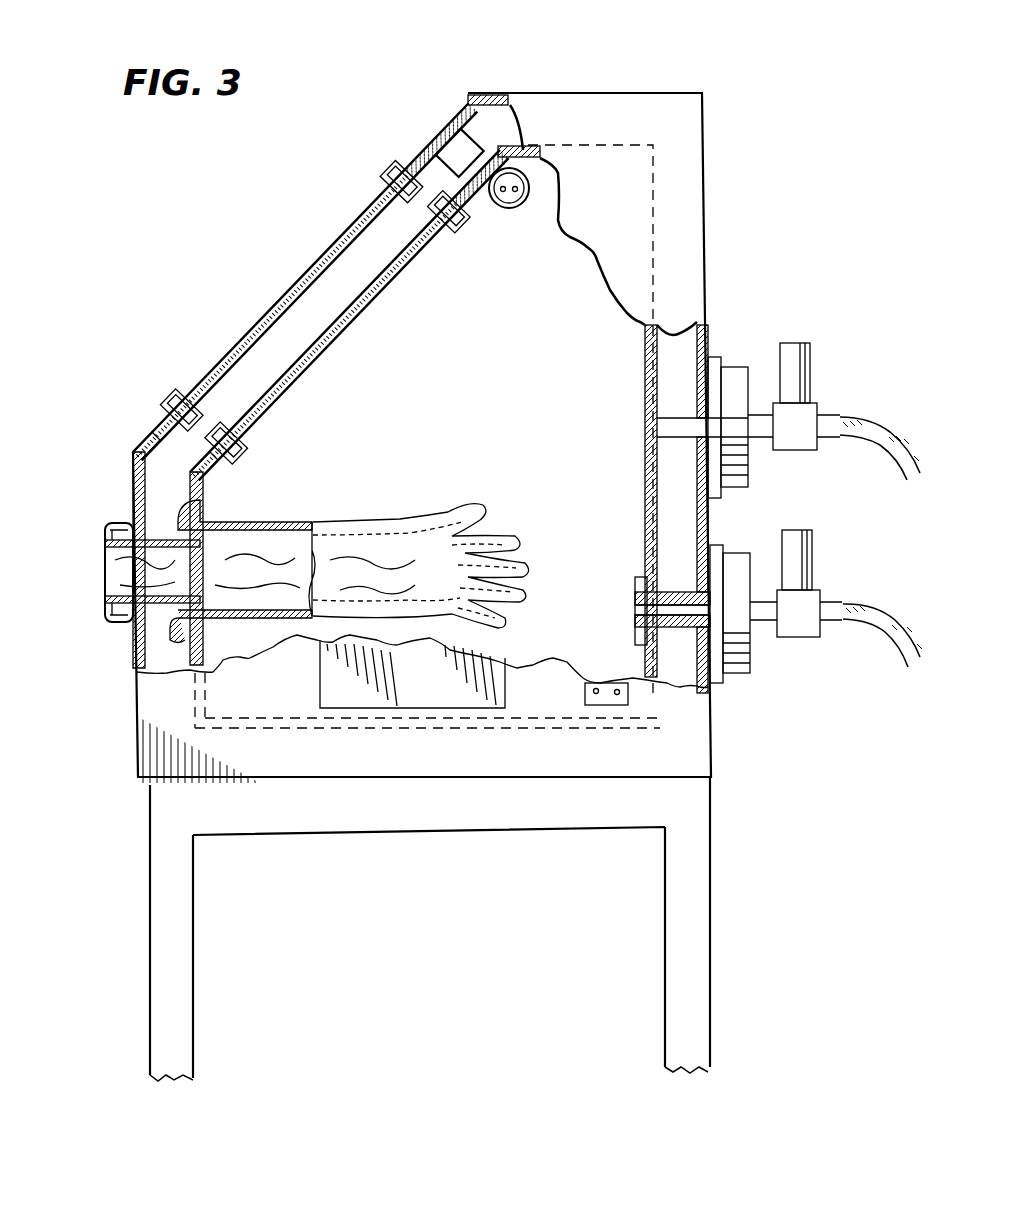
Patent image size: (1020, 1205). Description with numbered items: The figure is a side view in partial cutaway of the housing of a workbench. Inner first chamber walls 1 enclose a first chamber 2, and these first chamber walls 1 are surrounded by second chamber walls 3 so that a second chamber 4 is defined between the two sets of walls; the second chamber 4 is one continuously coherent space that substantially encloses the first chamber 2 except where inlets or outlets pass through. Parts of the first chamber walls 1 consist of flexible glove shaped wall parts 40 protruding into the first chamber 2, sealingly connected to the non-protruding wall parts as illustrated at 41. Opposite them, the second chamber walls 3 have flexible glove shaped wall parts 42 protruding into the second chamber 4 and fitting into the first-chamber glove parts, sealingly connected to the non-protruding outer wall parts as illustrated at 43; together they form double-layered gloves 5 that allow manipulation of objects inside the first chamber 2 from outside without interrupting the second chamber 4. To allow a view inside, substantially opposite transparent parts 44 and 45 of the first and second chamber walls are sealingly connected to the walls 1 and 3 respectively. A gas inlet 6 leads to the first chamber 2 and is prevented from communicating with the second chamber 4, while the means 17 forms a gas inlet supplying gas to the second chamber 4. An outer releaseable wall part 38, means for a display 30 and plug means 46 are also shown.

The first chamber walls 1 is at (665, 333).
The first chamber 2 is at (560, 308).
The second chamber walls 3 is at (707, 342).
The second chamber 4 is at (331, 261).
The double-layered gloves 5 is at (383, 558).
The gas inlet 6 is at (728, 622).
The gas inlet means 17 is at (733, 428).
The display means 30 is at (448, 138).
The outer releaseable wall part 38 is at (393, 678).
The glove shaped wall parts of the first chamber walls 40 is at (145, 460).
The connection of glove shaped parts to first chamber walls 41 is at (177, 507).
The glove shaped wall parts of the second chamber walls 42 is at (166, 606).
The connection of glove shaped parts to second chamber walls 43 is at (108, 622).
The transparent part of the first chamber walls 44 is at (260, 404).
The transparent part of the second chamber walls 45 is at (288, 290).
The plug means 46 is at (509, 167).